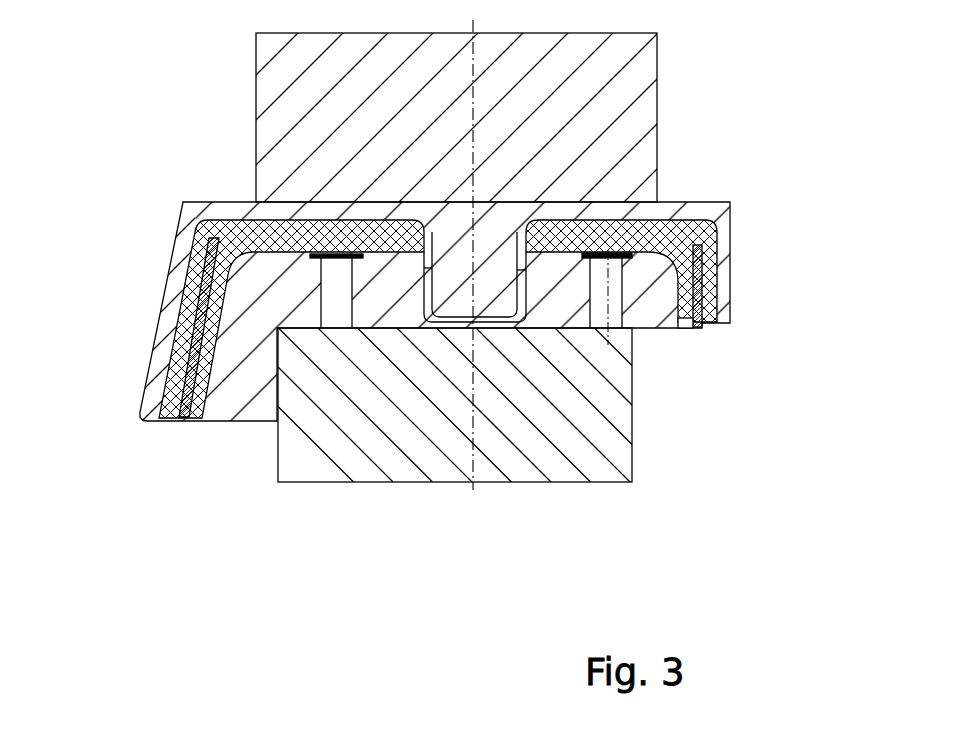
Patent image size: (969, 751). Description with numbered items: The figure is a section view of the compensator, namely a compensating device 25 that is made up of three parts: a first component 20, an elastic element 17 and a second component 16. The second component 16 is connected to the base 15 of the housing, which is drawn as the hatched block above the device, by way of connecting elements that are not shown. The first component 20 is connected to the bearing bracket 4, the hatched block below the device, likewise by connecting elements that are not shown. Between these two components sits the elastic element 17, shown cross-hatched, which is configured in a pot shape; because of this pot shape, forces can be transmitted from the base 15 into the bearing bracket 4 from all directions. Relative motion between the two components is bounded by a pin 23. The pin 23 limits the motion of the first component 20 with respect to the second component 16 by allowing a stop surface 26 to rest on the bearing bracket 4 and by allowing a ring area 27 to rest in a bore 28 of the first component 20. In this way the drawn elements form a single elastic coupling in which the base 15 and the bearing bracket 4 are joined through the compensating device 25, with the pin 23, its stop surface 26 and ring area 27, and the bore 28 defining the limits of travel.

The bearing bracket 4 is at (595, 395).
The base 15 is at (542, 142).
The second component 16 is at (492, 220).
The elastic element 17 is at (670, 243).
The first component 20 is at (652, 296).
The pin 23 is at (365, 295).
The compensating device 25 is at (120, 220).
The stop surface 26 is at (483, 307).
The ring area 27 is at (312, 404).
The bore 28 is at (528, 308).